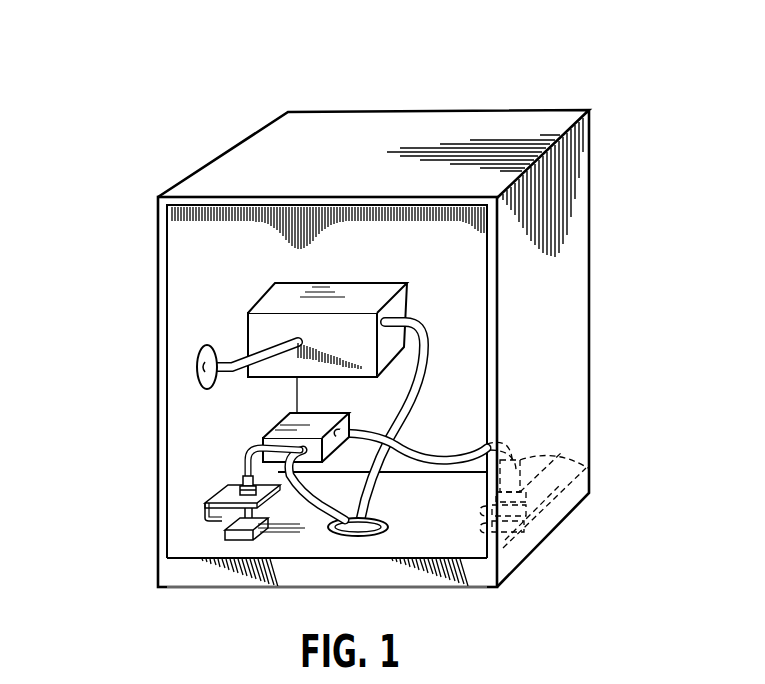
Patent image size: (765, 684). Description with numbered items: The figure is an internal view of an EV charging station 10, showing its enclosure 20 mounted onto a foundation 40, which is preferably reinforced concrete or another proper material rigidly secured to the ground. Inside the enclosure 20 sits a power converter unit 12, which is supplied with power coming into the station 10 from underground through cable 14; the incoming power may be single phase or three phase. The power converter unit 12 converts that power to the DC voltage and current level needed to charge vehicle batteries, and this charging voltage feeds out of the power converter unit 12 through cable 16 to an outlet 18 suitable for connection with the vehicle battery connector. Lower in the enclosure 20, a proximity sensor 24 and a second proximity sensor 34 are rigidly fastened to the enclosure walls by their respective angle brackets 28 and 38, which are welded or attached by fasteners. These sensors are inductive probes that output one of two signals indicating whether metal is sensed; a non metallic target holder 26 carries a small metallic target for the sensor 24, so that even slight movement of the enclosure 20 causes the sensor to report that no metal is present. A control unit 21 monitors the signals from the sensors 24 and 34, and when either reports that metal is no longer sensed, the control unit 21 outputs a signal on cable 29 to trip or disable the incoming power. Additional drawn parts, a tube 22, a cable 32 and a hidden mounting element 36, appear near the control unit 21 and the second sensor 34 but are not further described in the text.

The EV charging station 10 is at (237, 122).
The power converter unit 12 is at (320, 302).
The cable 14 is at (427, 336).
The cable 16 is at (238, 357).
The outlet 18 is at (195, 366).
The enclosure 20 is at (193, 270).
The control unit 21 is at (290, 422).
The tube 22 is at (244, 449).
The proximity sensor 24 is at (240, 483).
The non metallic target holder 26 is at (224, 521).
The angle bracket 28 is at (238, 492).
The cable 29 is at (302, 496).
The cable 32 is at (445, 440).
The proximity sensor 34 is at (520, 468).
The mounting plate 36 is at (527, 545).
The angle bracket 38 is at (540, 497).
The foundation 40 is at (195, 576).